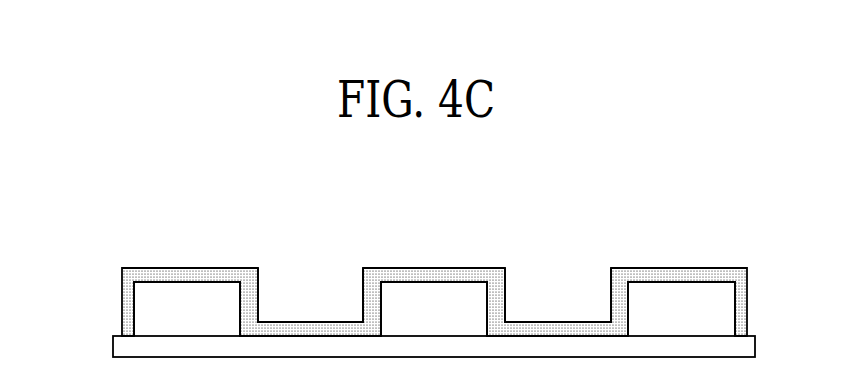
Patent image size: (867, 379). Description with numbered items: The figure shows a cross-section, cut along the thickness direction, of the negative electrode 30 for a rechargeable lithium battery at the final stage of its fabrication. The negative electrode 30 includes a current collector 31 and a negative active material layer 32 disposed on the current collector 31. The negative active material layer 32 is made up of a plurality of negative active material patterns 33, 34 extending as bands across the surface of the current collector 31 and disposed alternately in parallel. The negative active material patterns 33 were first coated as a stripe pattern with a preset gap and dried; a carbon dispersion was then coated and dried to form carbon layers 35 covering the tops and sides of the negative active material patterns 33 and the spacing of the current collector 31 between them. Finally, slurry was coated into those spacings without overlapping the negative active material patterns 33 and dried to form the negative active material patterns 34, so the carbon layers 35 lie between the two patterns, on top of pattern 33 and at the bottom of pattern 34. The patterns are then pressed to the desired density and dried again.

The negative electrode 30 is at (146, 212).
The current collector 31 is at (745, 347).
The negative active material layer 32 is at (103, 268).
The negative active material pattern 33 is at (186, 297).
The negative active material pattern 34 is at (308, 283).
The carbon layer 35 is at (742, 298).